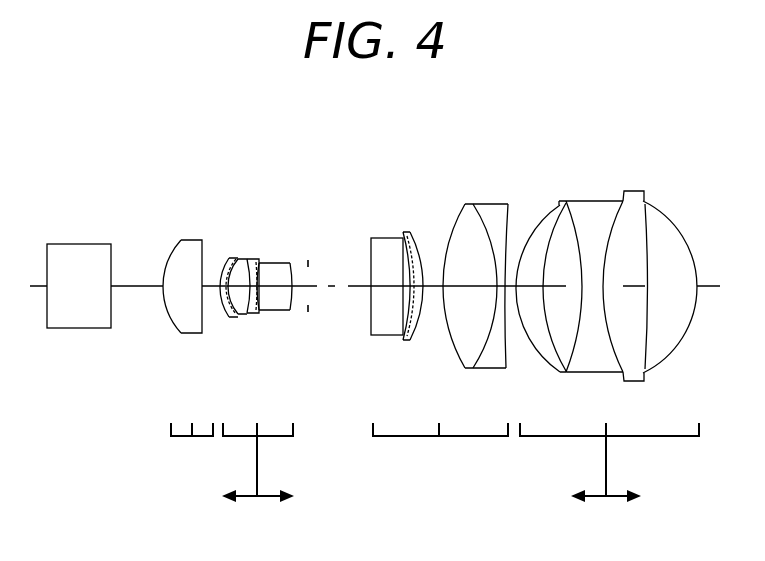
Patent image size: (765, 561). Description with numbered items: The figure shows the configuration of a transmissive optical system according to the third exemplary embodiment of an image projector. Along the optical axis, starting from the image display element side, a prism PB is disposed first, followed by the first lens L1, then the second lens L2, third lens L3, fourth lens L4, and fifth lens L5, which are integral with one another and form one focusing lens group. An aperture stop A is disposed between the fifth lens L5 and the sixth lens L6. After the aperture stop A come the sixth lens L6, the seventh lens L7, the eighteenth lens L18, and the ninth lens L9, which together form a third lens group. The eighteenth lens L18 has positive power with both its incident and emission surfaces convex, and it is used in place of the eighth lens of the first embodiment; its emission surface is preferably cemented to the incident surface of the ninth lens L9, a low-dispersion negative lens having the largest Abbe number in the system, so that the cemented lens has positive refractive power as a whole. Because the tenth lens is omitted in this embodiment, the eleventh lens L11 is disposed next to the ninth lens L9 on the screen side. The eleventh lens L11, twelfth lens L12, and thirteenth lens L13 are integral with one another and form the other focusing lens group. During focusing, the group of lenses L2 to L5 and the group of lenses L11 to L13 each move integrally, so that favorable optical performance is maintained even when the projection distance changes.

The prism PB is at (80, 248).
The first lens L1 is at (192, 245).
The second lens L2 is at (232, 258).
The third lens L3 is at (243, 260).
The fourth lens L4 is at (253, 255).
The fifth lens L5 is at (282, 262).
The aperture stop A is at (308, 265).
The sixth lens L6 is at (375, 242).
The seventh lens L7 is at (403, 235).
The eighteenth lens L18 is at (467, 213).
The ninth lens L9 is at (498, 213).
The eleventh lens L11 is at (553, 210).
The twelfth lens L12 is at (597, 205).
The thirteenth lens L13 is at (633, 195).